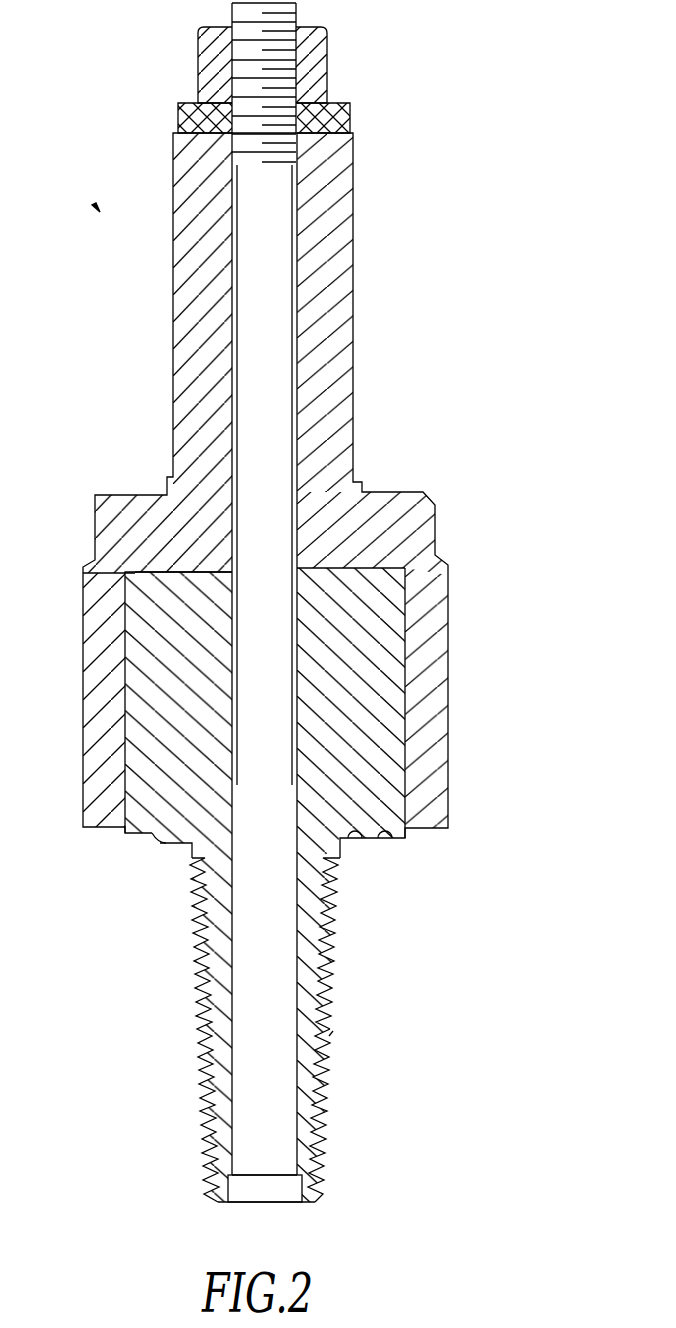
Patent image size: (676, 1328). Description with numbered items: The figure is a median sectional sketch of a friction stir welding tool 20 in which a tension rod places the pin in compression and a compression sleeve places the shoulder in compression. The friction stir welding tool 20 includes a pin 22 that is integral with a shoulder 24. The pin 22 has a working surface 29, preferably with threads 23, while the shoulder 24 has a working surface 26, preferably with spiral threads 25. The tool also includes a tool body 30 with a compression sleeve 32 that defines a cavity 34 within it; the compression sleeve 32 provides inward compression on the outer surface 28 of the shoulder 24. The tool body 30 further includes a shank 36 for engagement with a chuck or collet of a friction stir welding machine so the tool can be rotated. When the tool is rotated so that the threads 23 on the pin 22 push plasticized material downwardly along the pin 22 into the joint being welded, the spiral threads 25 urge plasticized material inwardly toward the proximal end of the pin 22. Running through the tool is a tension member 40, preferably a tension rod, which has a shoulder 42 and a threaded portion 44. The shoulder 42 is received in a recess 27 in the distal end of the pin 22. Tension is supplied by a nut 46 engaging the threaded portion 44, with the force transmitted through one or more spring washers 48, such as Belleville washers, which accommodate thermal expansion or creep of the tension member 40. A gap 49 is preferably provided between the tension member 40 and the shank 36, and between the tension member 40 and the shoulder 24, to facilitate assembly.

The friction stir welding tool 20 is at (239, 482).
The nut 46 is at (233, 65).
The threaded portion 44 is at (309, 82).
The spring washer 48 is at (292, 109).
The shank 36 is at (281, 314).
The tension member 40 is at (245, 654).
The gap 49 is at (313, 475).
The tool body 30 is at (279, 519).
The shoulder 24 is at (394, 885).
The compression sleeve 32 is at (459, 698).
The cavity 34 is at (164, 887).
The outer surface 28 is at (104, 700).
The working surface 26 is at (152, 870).
The spiral threads 25 is at (383, 857).
The pin 22 is at (352, 943).
The threads 23 is at (357, 1042).
The working surface 29 is at (349, 1115).
The shoulder 42 is at (237, 1178).
The recess 27 is at (266, 1218).